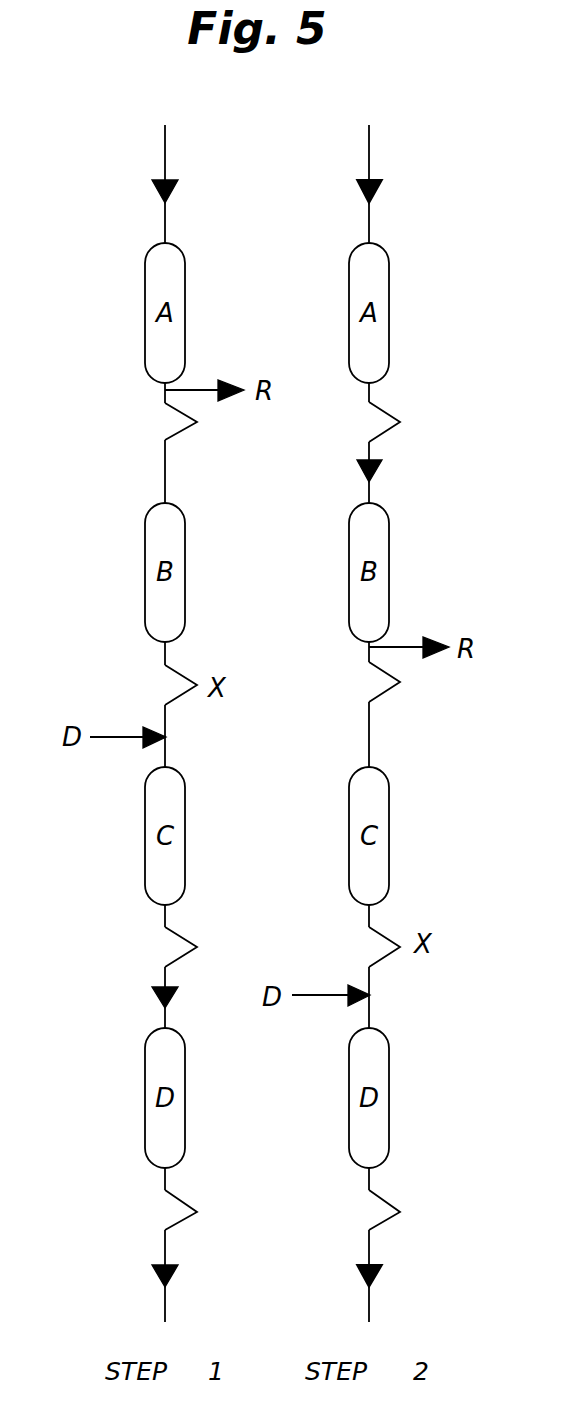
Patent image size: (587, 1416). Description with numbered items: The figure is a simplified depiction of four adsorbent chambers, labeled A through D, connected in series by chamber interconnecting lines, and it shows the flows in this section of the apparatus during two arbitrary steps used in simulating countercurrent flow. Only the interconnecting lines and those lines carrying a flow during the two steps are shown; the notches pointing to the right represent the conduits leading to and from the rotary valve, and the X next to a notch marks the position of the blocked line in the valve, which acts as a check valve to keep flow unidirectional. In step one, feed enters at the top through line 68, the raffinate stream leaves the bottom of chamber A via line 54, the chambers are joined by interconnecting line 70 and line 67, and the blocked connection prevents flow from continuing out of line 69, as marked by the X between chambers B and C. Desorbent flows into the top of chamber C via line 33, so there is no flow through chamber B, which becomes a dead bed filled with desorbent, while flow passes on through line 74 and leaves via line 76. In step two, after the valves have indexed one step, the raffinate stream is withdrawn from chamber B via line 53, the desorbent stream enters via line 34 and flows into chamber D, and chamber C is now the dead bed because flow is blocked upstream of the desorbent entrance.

The feed stream inlet to column A 68 is at (164, 150).
The line 54 is at (195, 388).
The interconnecting transfer line between columns 70 is at (167, 459).
The line 69 is at (178, 671).
The line 33 is at (114, 737).
The transfer line from column C to column D 74 is at (167, 1015).
The outlet line from column D 76 is at (167, 1300).
The transfer line from column A to column B 67 is at (384, 407).
The line 53 is at (401, 647).
The line 34 is at (322, 994).